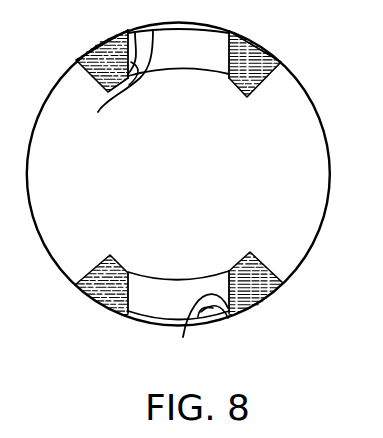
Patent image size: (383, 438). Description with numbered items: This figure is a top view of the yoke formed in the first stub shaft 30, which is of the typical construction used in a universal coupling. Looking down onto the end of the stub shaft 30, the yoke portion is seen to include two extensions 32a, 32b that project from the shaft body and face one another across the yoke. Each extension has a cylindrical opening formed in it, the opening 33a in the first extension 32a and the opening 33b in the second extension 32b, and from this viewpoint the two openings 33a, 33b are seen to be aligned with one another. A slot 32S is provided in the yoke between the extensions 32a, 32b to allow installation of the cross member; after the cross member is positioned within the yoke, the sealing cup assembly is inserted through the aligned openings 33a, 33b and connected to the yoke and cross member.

The first stub shaft 30 is at (313, 221).
The extension 32a is at (251, 50).
The extension 32b is at (281, 283).
The slot 32S is at (230, 67).
The cylindrical opening 33a is at (98, 112).
The cylindrical opening 33b is at (183, 337).